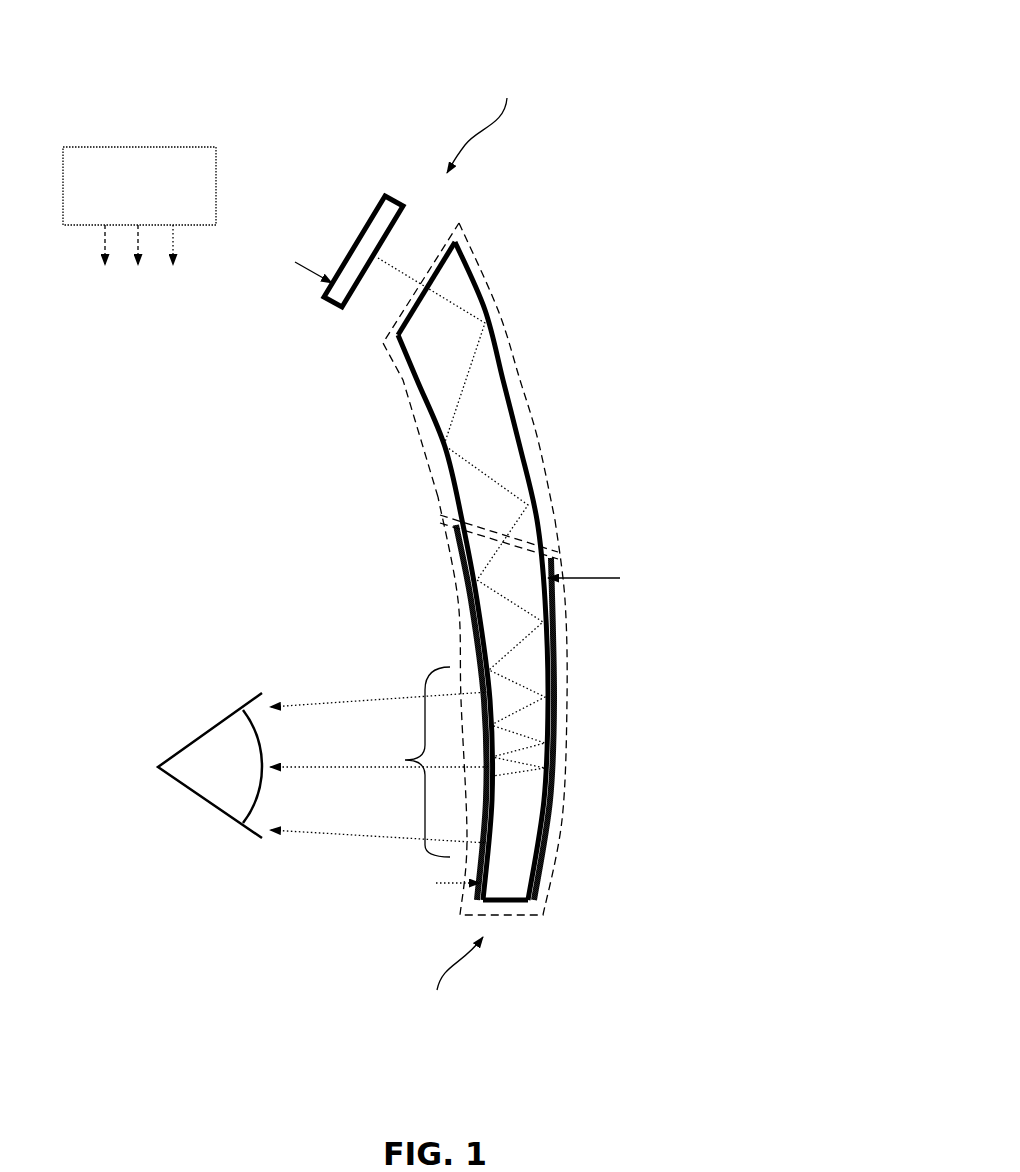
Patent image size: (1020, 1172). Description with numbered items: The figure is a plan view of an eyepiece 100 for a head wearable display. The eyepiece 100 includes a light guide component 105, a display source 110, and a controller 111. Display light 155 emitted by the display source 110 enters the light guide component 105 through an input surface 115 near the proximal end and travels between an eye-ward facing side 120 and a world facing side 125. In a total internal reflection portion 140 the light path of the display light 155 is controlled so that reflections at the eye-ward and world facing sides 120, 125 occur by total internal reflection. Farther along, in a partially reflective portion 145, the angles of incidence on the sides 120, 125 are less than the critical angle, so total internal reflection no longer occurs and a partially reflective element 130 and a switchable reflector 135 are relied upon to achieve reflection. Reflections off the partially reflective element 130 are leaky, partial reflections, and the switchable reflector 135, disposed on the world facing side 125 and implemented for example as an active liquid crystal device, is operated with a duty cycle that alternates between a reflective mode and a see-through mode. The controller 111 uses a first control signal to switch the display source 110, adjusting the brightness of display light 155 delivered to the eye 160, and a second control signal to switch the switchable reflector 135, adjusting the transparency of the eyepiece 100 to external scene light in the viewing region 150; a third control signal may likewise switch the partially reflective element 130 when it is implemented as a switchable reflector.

The eyepiece 100 is at (710, 78).
The light guide component 105 is at (645, 317).
The display source 110 is at (383, 197).
The controller 111 is at (152, 207).
The input surface 115 is at (410, 312).
The eye-ward facing side 120 is at (400, 443).
The world facing side 125 is at (555, 430).
The partially reflective element 130 is at (462, 598).
The switchable reflector 135 is at (548, 715).
The total internal reflection (TIR) portion 140 is at (483, 270).
The partially reflective portion 145 is at (552, 868).
The viewing region 150 is at (405, 760).
The display light 155 is at (392, 262).
The eye 160 is at (232, 776).